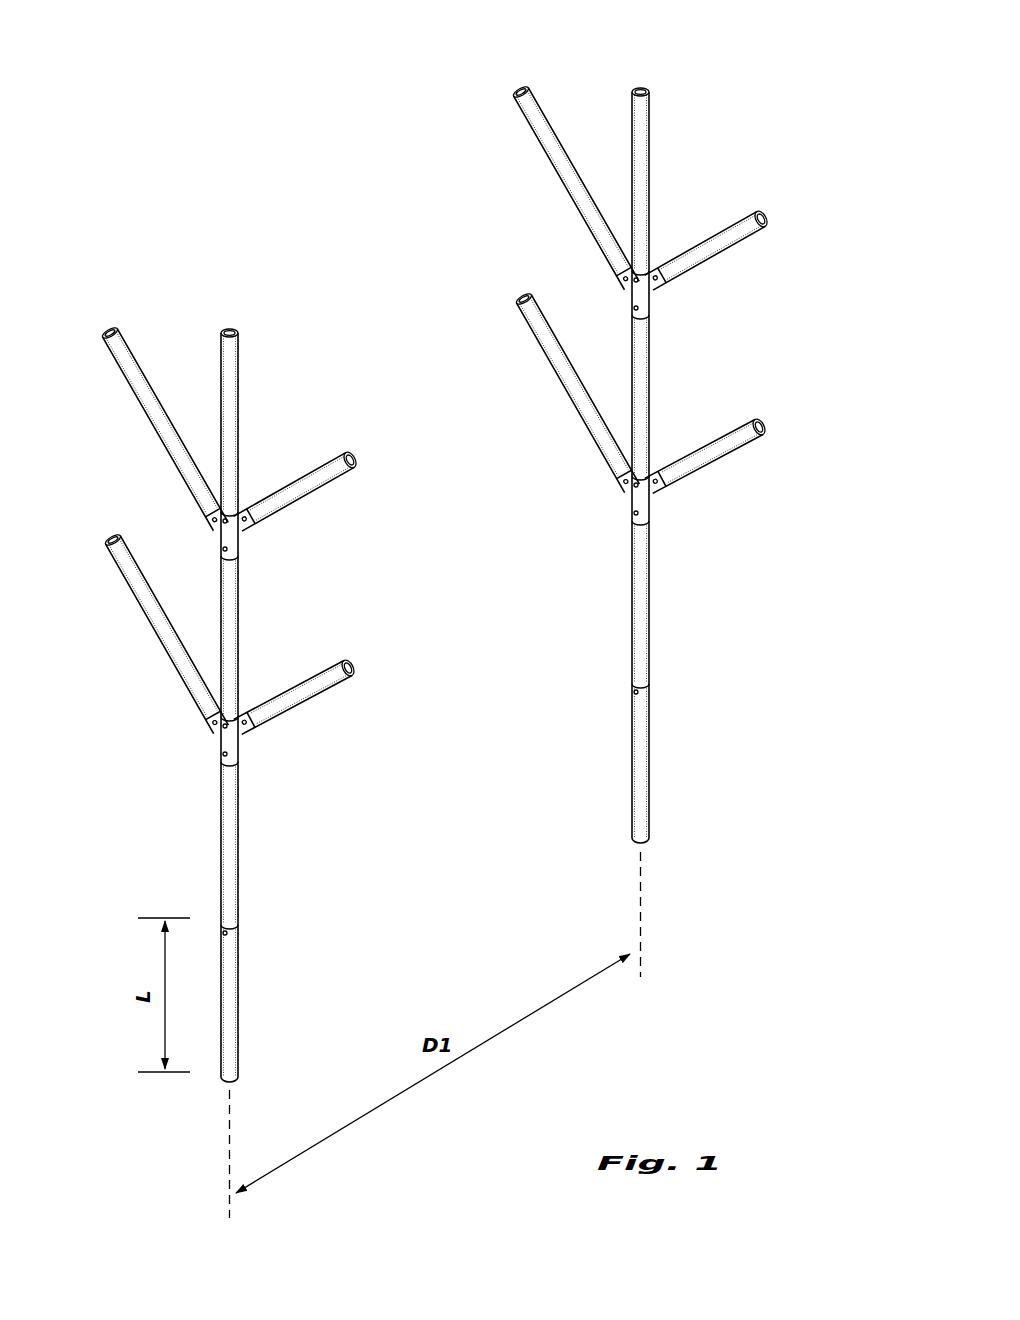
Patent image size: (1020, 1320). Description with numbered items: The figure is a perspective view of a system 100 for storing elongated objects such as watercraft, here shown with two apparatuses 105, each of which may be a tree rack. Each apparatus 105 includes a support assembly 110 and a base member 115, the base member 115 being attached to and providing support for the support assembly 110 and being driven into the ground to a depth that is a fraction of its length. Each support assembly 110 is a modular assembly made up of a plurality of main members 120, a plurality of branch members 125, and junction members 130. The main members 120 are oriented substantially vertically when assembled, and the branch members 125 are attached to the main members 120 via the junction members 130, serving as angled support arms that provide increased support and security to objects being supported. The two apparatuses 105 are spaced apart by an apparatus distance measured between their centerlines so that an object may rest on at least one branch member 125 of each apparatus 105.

The system 100 is at (437, 616).
The apparatus 105 is at (437, 616).
The support assembly 110 is at (521, 653).
The base member 115 is at (227, 1005).
The main member 120 is at (233, 397).
The branch member 125 is at (143, 396).
The junction member 130 is at (250, 543).